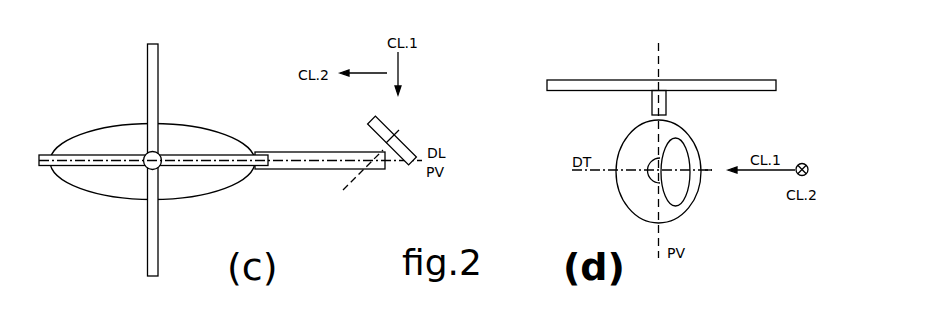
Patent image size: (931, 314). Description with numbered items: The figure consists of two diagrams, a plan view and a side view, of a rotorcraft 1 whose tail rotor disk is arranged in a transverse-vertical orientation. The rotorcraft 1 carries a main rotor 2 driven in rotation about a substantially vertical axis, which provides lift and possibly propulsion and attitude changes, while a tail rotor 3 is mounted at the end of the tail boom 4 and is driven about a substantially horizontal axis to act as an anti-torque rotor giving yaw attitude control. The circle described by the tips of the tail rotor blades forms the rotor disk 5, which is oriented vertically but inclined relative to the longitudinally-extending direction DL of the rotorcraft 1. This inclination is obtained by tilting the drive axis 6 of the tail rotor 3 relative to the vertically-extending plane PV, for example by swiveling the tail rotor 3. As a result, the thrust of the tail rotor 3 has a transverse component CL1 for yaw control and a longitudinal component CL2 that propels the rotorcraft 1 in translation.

The rotorcraft 1 is at (213, 130).
The main rotor 2 is at (147, 72).
The tail rotor 3 is at (401, 176).
The tail boom 4 is at (318, 170).
The rotor disk 5 is at (410, 147).
The drive axis 6 is at (352, 180).